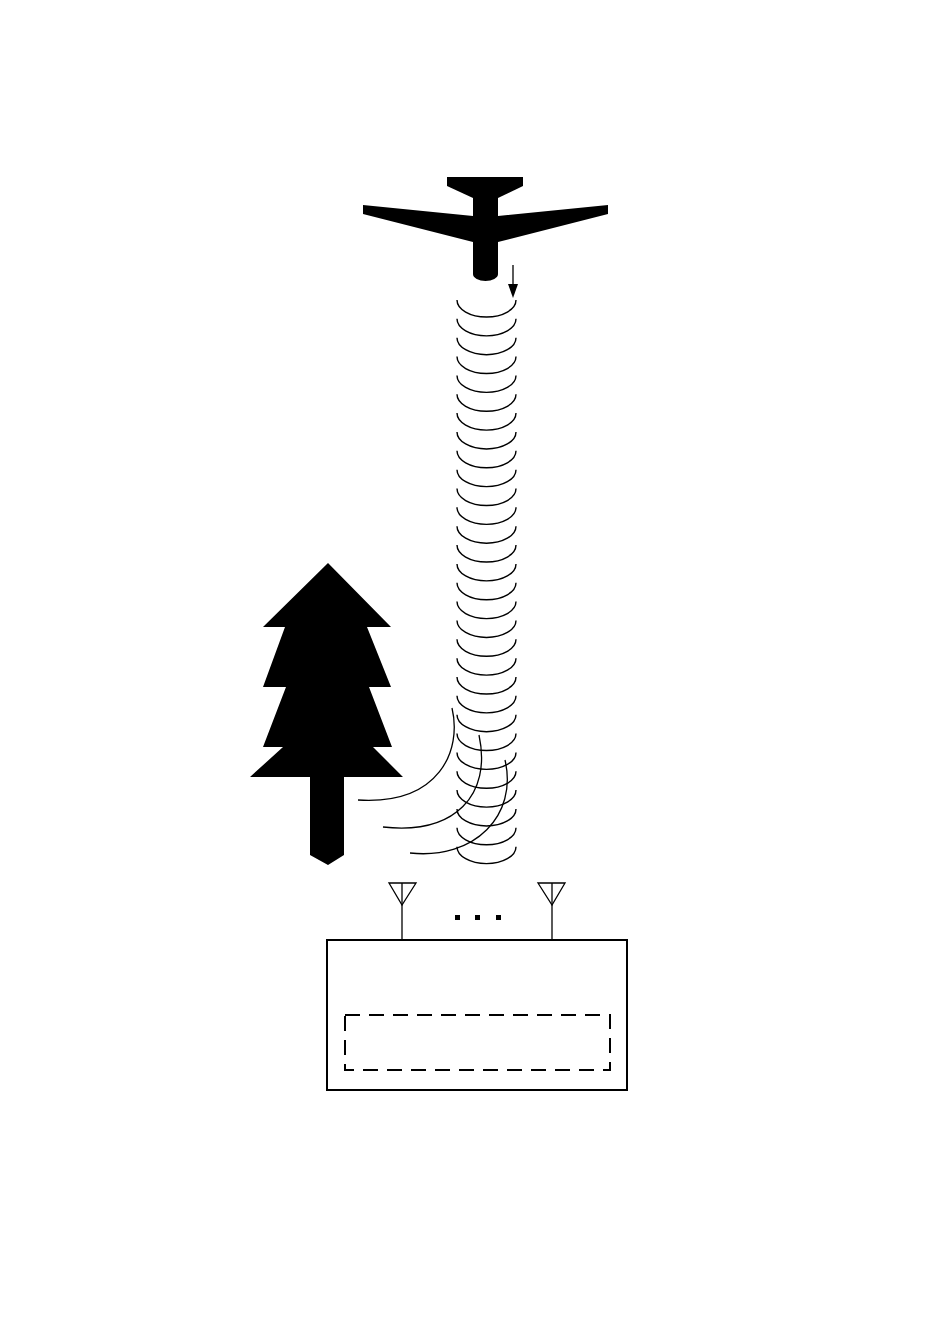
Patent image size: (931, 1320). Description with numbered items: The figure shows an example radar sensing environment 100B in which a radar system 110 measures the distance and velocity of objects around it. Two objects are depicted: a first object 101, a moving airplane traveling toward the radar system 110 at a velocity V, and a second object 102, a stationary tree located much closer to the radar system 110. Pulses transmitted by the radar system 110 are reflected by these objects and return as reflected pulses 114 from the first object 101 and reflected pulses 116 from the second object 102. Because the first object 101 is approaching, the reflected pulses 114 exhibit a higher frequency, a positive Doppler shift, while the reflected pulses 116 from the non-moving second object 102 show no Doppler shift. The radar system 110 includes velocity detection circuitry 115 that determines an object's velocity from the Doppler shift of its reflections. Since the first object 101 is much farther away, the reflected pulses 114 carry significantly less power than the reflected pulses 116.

The radar sensing environment 100B is at (172, 68).
The first object 101 is at (514, 178).
The second object 102 is at (302, 588).
The radar system 110 is at (538, 991).
The reflected pulses 114 is at (523, 301).
The velocity detection circuitry 115 is at (588, 1057).
The reflected pulses 116 is at (418, 872).